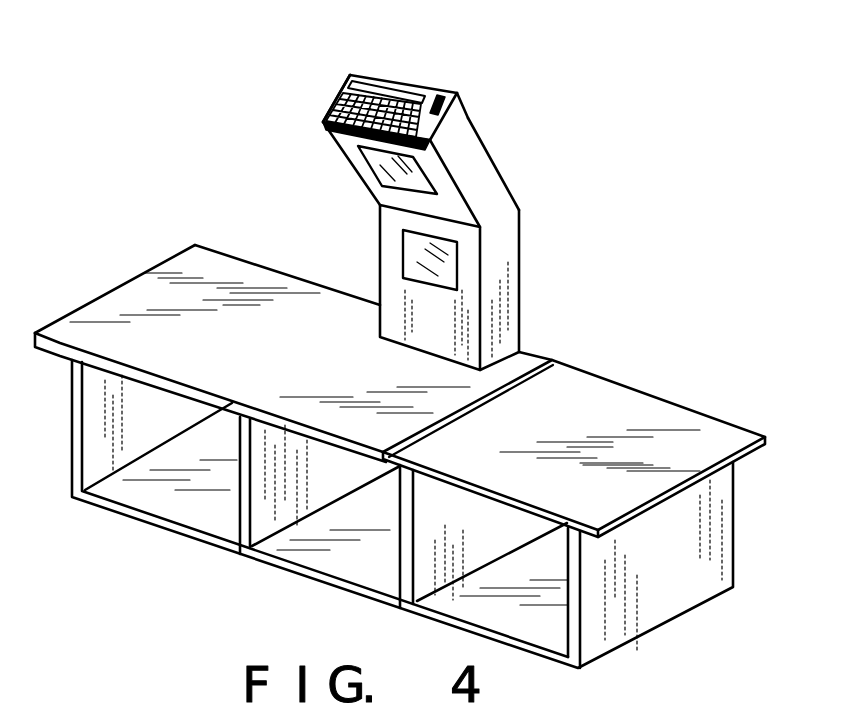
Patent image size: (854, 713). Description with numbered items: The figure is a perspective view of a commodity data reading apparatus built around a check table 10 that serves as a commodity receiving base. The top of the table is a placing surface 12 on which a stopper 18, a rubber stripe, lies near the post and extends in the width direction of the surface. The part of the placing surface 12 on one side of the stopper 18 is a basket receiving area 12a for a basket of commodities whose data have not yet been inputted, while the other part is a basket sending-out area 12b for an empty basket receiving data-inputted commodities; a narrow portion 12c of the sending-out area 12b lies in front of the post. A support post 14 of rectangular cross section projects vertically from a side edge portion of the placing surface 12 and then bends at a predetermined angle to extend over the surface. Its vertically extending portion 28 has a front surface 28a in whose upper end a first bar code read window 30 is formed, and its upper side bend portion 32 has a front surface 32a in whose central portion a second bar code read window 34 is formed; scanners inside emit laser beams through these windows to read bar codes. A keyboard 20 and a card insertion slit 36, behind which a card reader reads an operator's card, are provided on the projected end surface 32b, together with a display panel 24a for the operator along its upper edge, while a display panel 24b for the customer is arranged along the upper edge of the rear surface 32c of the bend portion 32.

The check table 10 is at (716, 514).
The placing surface 12 is at (200, 246).
The basket receiving area 12a is at (678, 412).
The basket sending-out area 12b is at (96, 303).
The narrow portion 12c is at (243, 383).
The support post 14 is at (498, 229).
The stopper 18 is at (513, 384).
The keyboard 20 is at (354, 75).
The display panel for an operator 24a is at (389, 86).
The display panel for a customer 24b is at (461, 94).
The vertically extending portion 28 is at (509, 277).
The front surface 28a is at (468, 333).
The first bar code read window 30 is at (411, 243).
The upper side bend portion 32 is at (473, 163).
The front surface 32a is at (444, 190).
The projected end surface 32b is at (340, 92).
The rear surface 32c is at (468, 119).
The second bar code read window 34 is at (366, 160).
The card insertion slit 36 is at (440, 94).